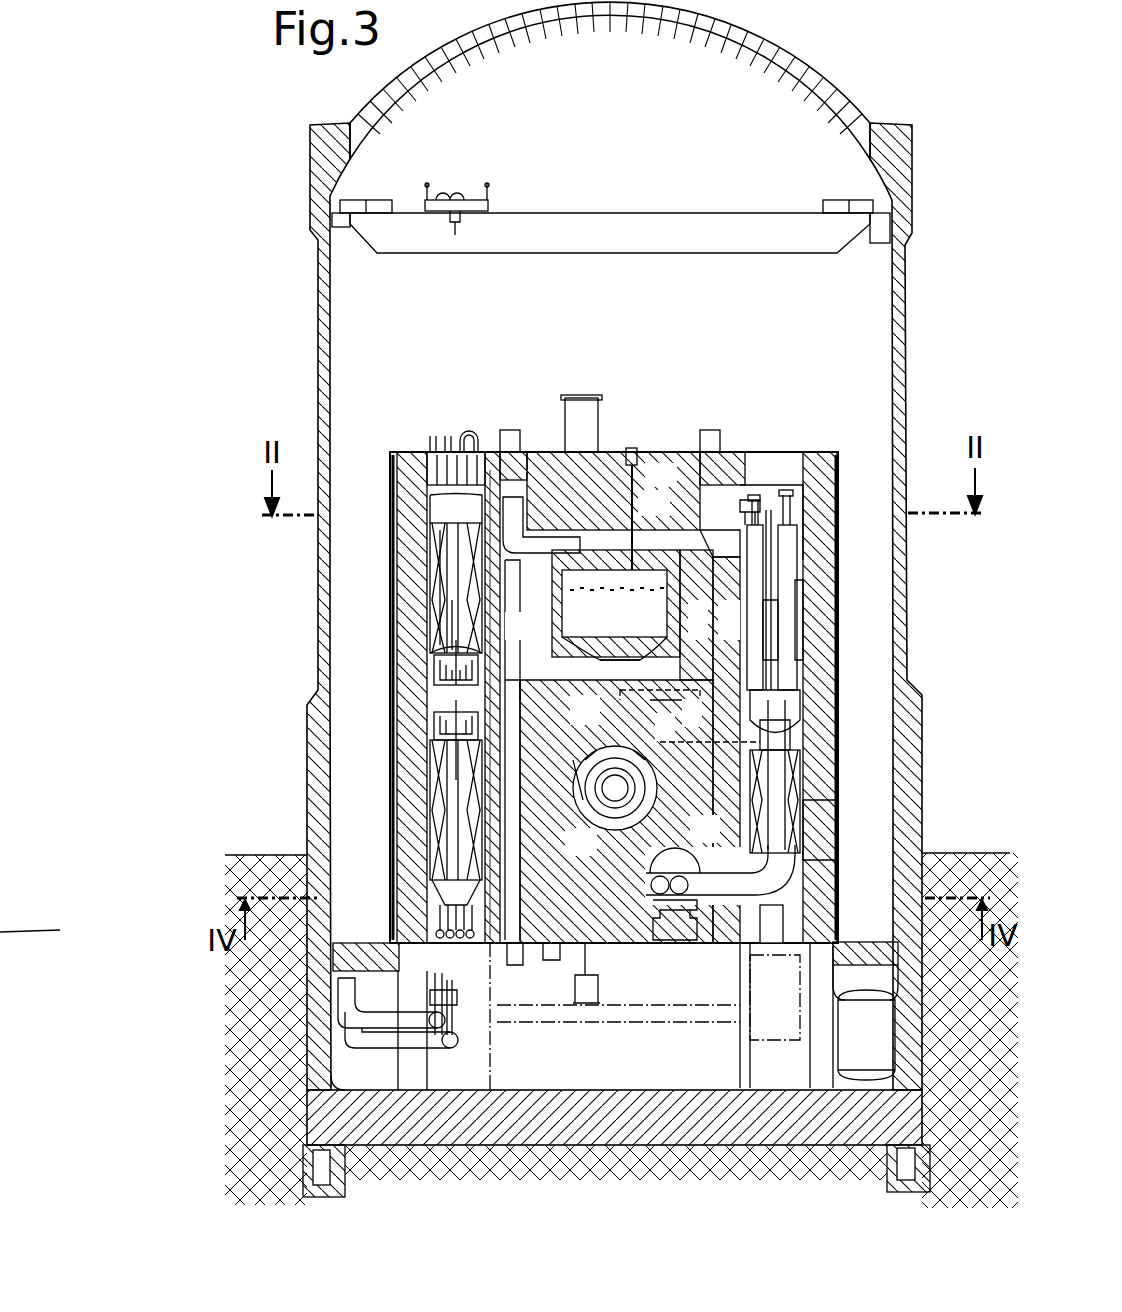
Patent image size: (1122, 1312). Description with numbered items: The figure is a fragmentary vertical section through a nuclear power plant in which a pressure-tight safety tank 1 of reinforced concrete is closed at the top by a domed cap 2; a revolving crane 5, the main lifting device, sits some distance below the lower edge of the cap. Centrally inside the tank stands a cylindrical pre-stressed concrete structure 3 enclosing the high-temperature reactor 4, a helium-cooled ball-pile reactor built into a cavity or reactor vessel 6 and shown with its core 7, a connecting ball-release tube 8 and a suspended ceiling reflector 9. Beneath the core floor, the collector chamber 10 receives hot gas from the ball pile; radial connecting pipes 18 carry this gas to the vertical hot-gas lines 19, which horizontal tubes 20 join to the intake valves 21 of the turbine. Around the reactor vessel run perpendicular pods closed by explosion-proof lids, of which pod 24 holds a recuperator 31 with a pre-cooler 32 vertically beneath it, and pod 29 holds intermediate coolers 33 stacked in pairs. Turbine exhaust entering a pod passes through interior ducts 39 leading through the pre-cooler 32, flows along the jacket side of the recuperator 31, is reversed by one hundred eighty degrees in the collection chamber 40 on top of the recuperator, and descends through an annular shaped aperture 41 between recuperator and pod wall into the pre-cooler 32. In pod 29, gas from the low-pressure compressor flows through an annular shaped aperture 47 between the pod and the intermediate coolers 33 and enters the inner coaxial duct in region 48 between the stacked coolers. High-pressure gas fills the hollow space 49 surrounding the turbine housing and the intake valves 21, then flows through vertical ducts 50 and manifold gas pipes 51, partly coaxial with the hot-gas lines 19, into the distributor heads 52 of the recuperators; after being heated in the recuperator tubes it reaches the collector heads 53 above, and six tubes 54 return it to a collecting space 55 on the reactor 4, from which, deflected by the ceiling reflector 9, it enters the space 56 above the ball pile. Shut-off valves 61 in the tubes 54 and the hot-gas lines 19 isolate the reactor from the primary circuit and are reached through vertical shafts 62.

The safety tank 1 is at (907, 372).
The domed cap 2 is at (812, 82).
The pre-stressed concrete structure 3 is at (404, 452).
The high-temperature reactor 4 is at (574, 632).
The revolving crane 5 is at (543, 226).
The reactor vessel 6 is at (632, 615).
The core 7 is at (672, 690).
The connecting ball-release tube 8 is at (650, 700).
The suspended ceiling reflector 9 is at (593, 550).
The collector chamber 10 is at (600, 660).
The radial connecting pipes 18 is at (519, 665).
The vertical hot-gas lines 19 is at (510, 745).
The horizontal tubes 20 is at (553, 760).
The intake valves 21 is at (600, 815).
The pod 24 is at (757, 500).
The pod 29 is at (450, 512).
The recuperator 31 is at (790, 645).
The pre-cooler 32 is at (810, 822).
The intermediate coolers 33 is at (440, 565).
The interior ducts 39 is at (775, 790).
The collection chamber 40 is at (780, 480).
The annular shaped aperture 41 is at (800, 612).
The annular shaped aperture 47 is at (470, 650).
The region 48 is at (485, 697).
The hollow space 49 is at (670, 805).
The vertical ducts 50 is at (790, 740).
The manifold gas pipes 51 is at (515, 592).
The distributor heads 52 is at (722, 736).
The collector heads 53 is at (697, 537).
The tubes 54 is at (661, 473).
The collecting space 55 is at (577, 533).
The space 56 is at (643, 577).
The shut-off valves 61 is at (500, 498).
The vertical shafts 62 is at (572, 958).